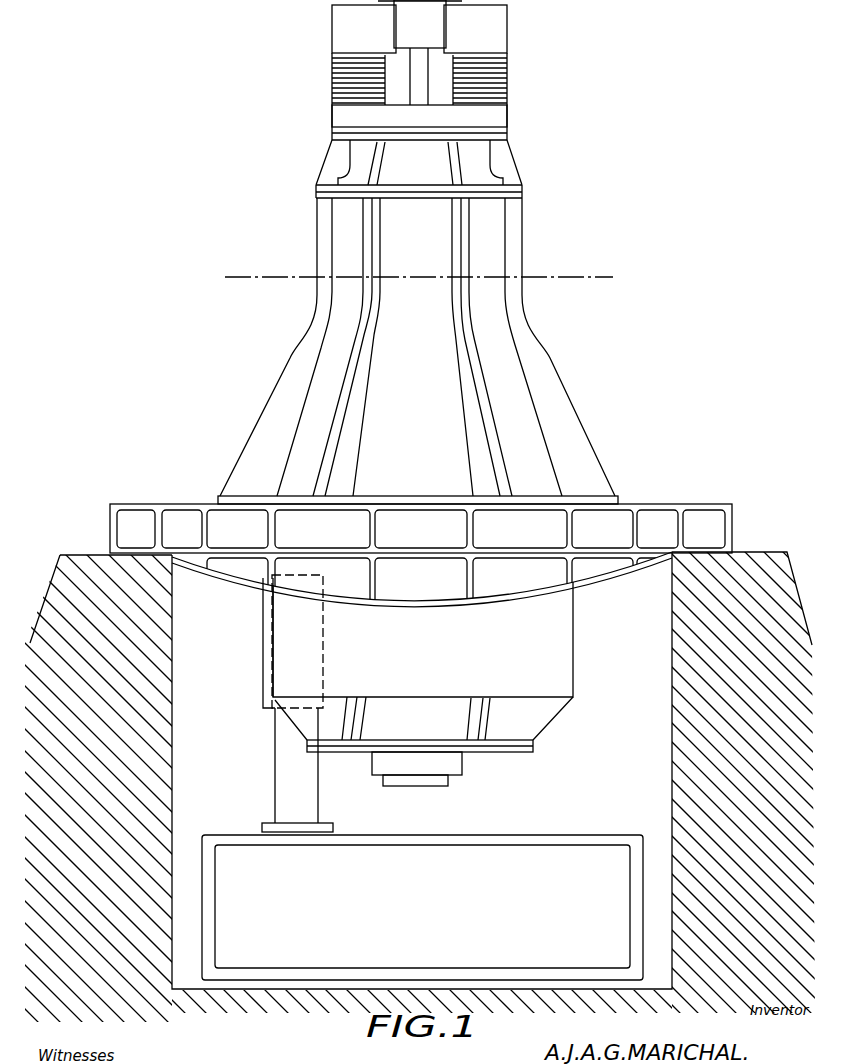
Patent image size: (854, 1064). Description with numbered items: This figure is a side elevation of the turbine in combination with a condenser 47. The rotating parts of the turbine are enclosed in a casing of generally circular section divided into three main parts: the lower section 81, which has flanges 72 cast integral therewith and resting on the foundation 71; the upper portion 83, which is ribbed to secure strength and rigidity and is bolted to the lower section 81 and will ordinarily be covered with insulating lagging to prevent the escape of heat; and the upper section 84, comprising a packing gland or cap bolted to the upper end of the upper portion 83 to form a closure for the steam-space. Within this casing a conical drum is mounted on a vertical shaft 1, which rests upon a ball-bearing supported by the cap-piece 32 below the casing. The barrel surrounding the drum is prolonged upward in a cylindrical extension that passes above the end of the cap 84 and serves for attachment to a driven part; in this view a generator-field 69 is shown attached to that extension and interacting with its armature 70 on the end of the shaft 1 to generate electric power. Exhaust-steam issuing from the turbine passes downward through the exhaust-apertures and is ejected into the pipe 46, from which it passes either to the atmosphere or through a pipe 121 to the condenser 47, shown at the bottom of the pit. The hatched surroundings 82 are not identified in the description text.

The vertical shaft 1 is at (419, 170).
The armature 70 is at (419, 70).
The generator-field 69 is at (487, 122).
The upper section 84 is at (478, 158).
The upper portion 83 is at (418, 351).
The flanges 72 is at (633, 505).
The lower section 81 is at (422, 646).
The ground masonry 82 is at (427, 785).
The foundation 71 is at (137, 707).
The pipe 46 is at (285, 617).
The pipe 121 is at (275, 783).
The cap-piece 32 is at (510, 753).
The condenser 47 is at (422, 907).